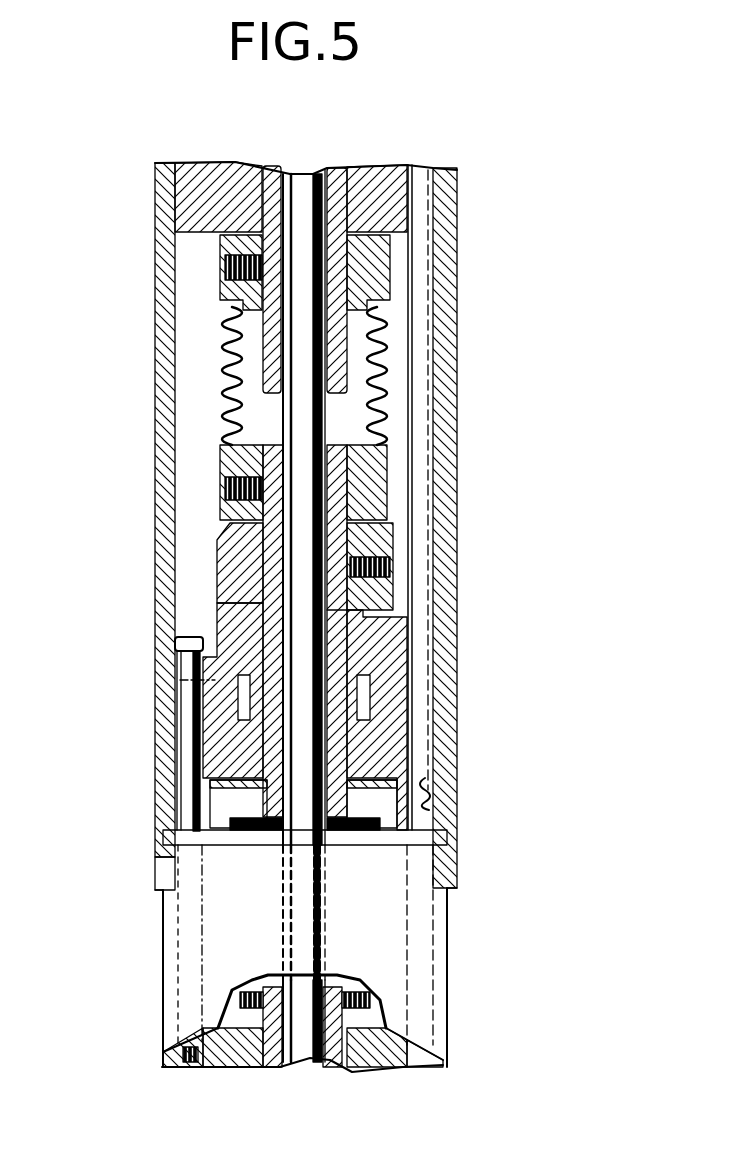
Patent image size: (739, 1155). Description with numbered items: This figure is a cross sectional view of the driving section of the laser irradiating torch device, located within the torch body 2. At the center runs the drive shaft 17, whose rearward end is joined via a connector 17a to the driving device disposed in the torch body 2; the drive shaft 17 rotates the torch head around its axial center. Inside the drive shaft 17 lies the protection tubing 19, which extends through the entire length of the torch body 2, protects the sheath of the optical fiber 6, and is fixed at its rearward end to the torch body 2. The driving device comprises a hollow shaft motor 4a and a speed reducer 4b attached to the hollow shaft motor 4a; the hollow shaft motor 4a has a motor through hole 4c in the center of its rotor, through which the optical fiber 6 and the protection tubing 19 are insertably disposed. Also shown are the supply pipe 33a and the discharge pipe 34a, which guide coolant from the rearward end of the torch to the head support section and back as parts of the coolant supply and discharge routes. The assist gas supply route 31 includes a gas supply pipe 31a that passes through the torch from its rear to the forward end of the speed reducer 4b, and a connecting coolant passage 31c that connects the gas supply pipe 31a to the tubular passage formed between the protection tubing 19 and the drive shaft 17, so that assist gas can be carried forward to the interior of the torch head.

The torch body 2 is at (135, 697).
The assist gas supply route 31 is at (293, 250).
The gas supply pipe 31a is at (173, 935).
The connecting coolant passage 31c is at (195, 738).
The drive shaft 17 is at (265, 367).
The connector 17a is at (235, 310).
The optical fiber 6 is at (303, 777).
The protection tubing 19 is at (300, 783).
The supply pipe 33a is at (428, 790).
The discharge pipe 34a is at (436, 795).
The hollow shaft motor 4a is at (221, 1062).
The speed reducer 4b is at (217, 995).
The motor through hole 4c is at (240, 977).